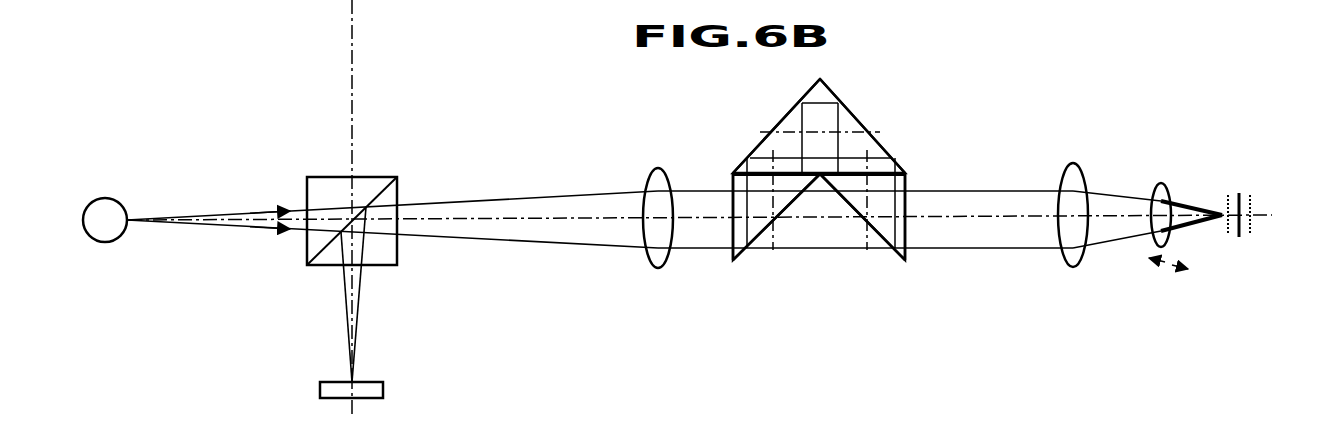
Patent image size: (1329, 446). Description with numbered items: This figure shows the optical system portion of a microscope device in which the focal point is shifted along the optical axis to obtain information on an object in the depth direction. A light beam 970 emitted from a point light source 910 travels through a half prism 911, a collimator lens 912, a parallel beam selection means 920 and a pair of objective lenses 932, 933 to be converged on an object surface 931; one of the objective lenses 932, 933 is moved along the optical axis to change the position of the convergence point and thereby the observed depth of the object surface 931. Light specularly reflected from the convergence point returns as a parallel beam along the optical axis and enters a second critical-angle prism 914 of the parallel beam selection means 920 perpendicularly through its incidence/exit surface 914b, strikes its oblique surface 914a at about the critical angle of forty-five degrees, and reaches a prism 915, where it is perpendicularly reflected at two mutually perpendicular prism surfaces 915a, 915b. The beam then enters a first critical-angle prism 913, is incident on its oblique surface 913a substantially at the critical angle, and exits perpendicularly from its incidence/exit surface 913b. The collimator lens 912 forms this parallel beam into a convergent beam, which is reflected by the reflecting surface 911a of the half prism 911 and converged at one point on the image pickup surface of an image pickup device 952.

The point light source 910 is at (113, 200).
The light beam 970 is at (237, 227).
The half prism 911 is at (325, 177).
The reflecting surface 911a is at (386, 182).
The image pickup device 952 is at (385, 385).
The collimator lens 912 is at (650, 170).
The parallel beam selection means 920 is at (832, 182).
The prism 915 is at (823, 90).
The prism surface 915a is at (882, 147).
The prism surface 915b is at (788, 112).
The first critical-angle prism 913 is at (760, 243).
The oblique surface 913a is at (765, 228).
The incidence/exit surface 913b is at (729, 247).
The second critical-angle prism 914 is at (883, 242).
The oblique surface 914a is at (842, 198).
The incidence/exit surface 914b is at (911, 247).
The objective lens 932 is at (1078, 167).
The objective lens 933 is at (1163, 183).
The object surface 931 is at (1241, 177).